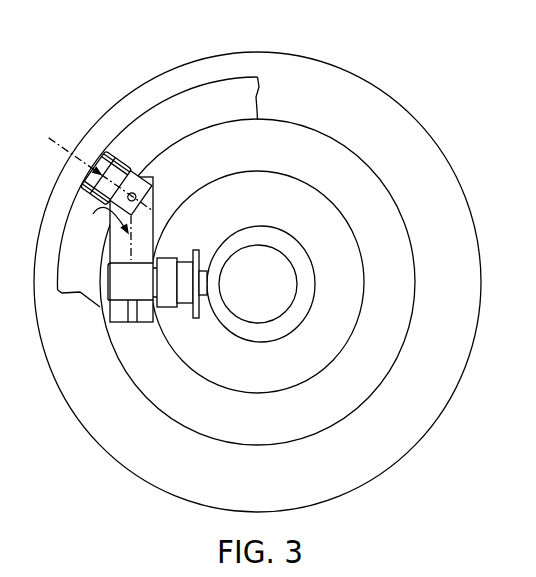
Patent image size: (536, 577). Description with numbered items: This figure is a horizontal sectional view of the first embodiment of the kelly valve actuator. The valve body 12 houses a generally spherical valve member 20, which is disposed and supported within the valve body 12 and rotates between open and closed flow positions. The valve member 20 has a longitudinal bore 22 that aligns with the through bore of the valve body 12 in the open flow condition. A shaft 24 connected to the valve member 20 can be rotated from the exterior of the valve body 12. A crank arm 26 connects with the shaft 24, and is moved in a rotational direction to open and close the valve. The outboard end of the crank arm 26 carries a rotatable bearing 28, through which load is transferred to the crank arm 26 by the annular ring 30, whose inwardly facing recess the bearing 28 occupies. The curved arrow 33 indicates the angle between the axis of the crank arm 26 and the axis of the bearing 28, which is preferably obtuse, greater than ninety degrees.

The annular ring 30 is at (50, 142).
The valve body 12 is at (343, 238).
The valve member 20 is at (282, 237).
The longitudinal bore 22 is at (276, 299).
The shaft 24 is at (138, 268).
The crank arm 26 is at (144, 216).
The bearing 28 is at (118, 158).
The curved arrow 33 is at (100, 226).